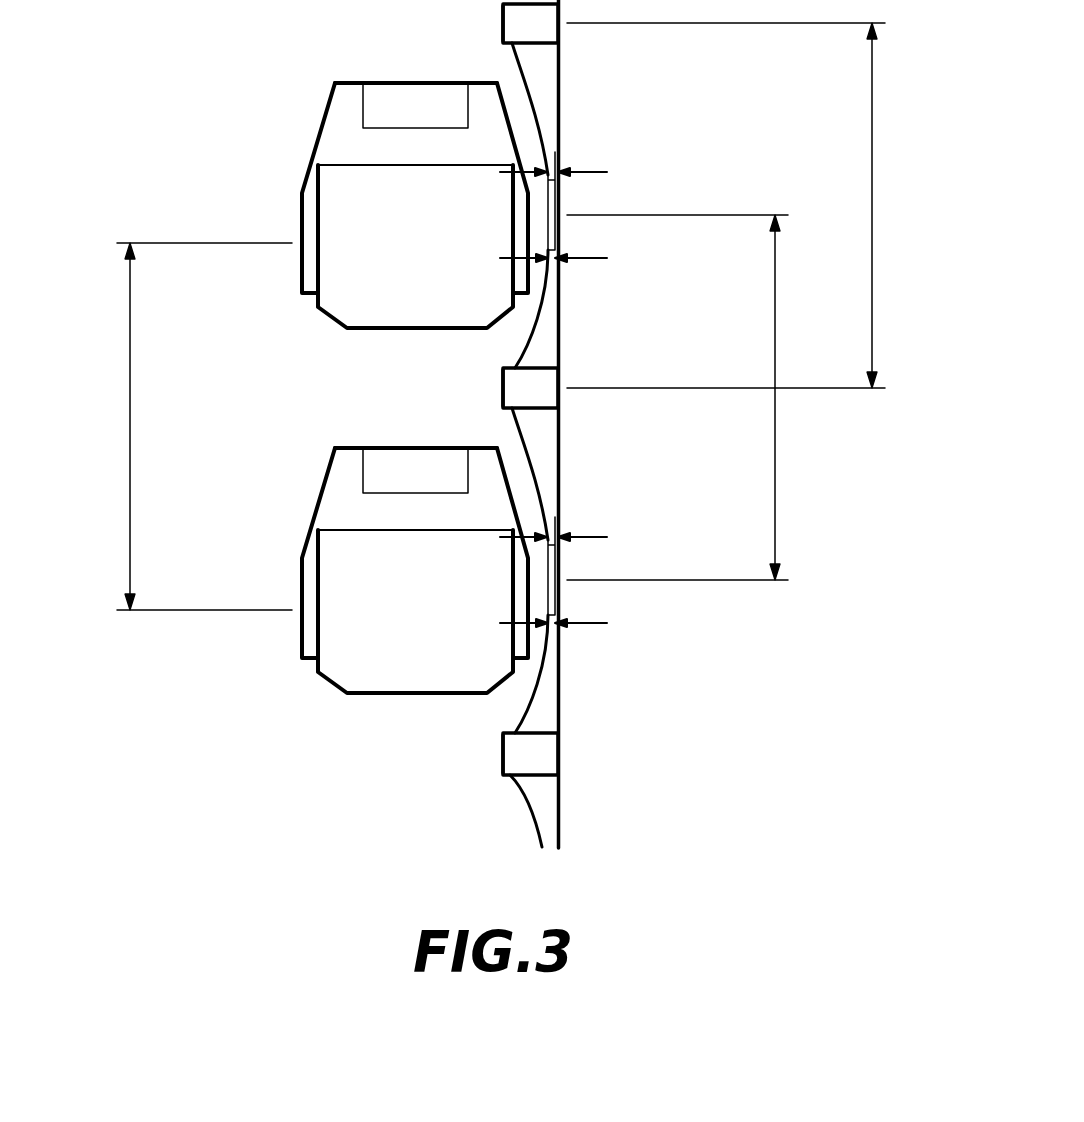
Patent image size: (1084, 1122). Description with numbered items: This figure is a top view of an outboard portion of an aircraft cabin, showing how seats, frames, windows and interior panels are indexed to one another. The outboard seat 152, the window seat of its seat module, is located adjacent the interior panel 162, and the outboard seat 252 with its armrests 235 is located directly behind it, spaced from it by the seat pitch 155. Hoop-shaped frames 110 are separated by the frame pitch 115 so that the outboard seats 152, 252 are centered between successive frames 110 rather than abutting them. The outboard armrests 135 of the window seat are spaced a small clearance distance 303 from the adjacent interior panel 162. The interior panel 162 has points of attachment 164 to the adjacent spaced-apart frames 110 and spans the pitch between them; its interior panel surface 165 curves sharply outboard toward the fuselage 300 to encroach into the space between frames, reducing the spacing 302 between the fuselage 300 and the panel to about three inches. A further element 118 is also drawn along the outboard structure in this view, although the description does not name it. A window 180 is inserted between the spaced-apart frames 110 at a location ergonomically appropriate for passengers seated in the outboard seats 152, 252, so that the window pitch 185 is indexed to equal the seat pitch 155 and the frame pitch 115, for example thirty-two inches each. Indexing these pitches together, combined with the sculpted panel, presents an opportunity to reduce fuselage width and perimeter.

The frame 110 is at (543, 30).
The frame pitch 115 is at (873, 208).
The substrate 118 is at (560, 695).
The outboard armrest 135 is at (520, 641).
The outboard seat 152 is at (438, 584).
The seat pitch 155 is at (130, 426).
The interior panel 162 is at (522, 340).
The points of attachment 164 is at (504, 23).
The interior panel surface 165 is at (527, 74).
The window 180 is at (553, 218).
The window pitch 185 is at (777, 443).
The armrest 235 is at (520, 276).
The outboard seat 252 is at (438, 219).
The fuselage 300 is at (570, 815).
The spacing 302 is at (555, 150).
The clearance distance 303 is at (548, 262).